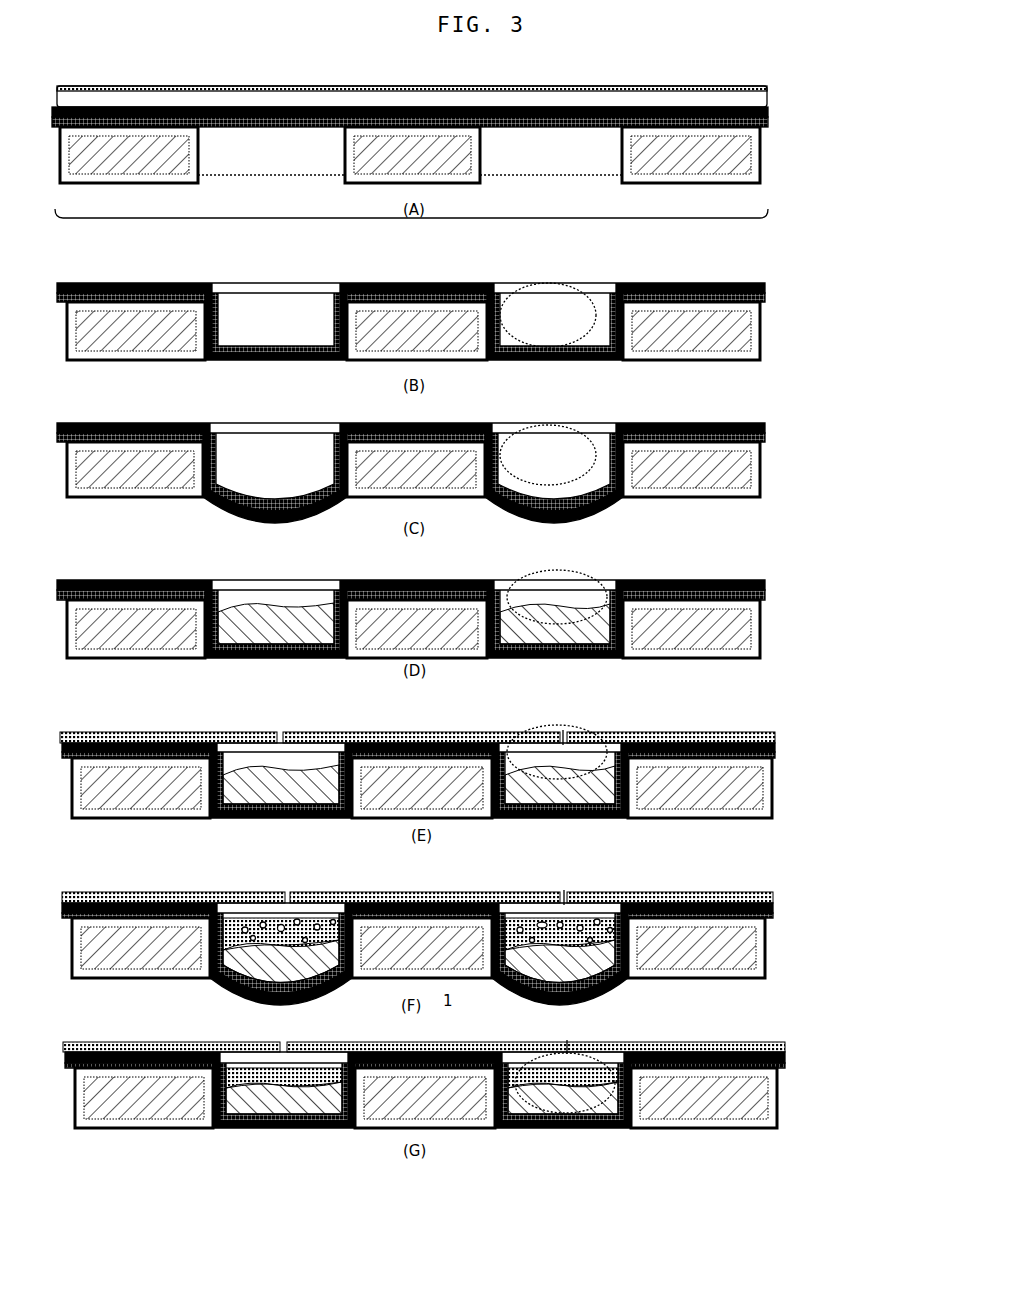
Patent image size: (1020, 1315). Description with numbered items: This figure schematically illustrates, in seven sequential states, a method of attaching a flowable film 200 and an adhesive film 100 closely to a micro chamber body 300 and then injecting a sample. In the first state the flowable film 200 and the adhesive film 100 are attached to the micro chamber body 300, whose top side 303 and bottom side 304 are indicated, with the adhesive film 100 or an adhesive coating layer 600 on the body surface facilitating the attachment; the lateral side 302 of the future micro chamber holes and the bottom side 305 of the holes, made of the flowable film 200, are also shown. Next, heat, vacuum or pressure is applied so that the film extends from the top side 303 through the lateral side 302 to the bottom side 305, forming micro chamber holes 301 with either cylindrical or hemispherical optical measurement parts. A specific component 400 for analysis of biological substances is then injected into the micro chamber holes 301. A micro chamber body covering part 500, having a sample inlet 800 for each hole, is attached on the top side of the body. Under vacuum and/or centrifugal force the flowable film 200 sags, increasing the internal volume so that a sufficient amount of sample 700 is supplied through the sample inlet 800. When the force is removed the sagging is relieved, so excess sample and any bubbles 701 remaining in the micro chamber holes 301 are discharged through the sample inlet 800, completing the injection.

The adhesive film 100 is at (770, 111).
The flowable film 200 is at (766, 122).
The micro chamber body 300 is at (745, 152).
The micro chamber holes 301 is at (567, 283).
The lateral side of the micro chamber holes 302 is at (618, 150).
The top side of the micro chamber body 303 is at (414, 86).
The bottom side of the micro chamber body 304 is at (267, 218).
The bottom side of the micro chamber holes 305 is at (557, 178).
The specific component 400 is at (585, 650).
The micro chamber body covering part 500 is at (781, 746).
The adhesive coating layer 600 is at (712, 181).
The sample 700 is at (515, 928).
The bubbles 701 is at (541, 920).
The sample inlet 800 is at (567, 742).